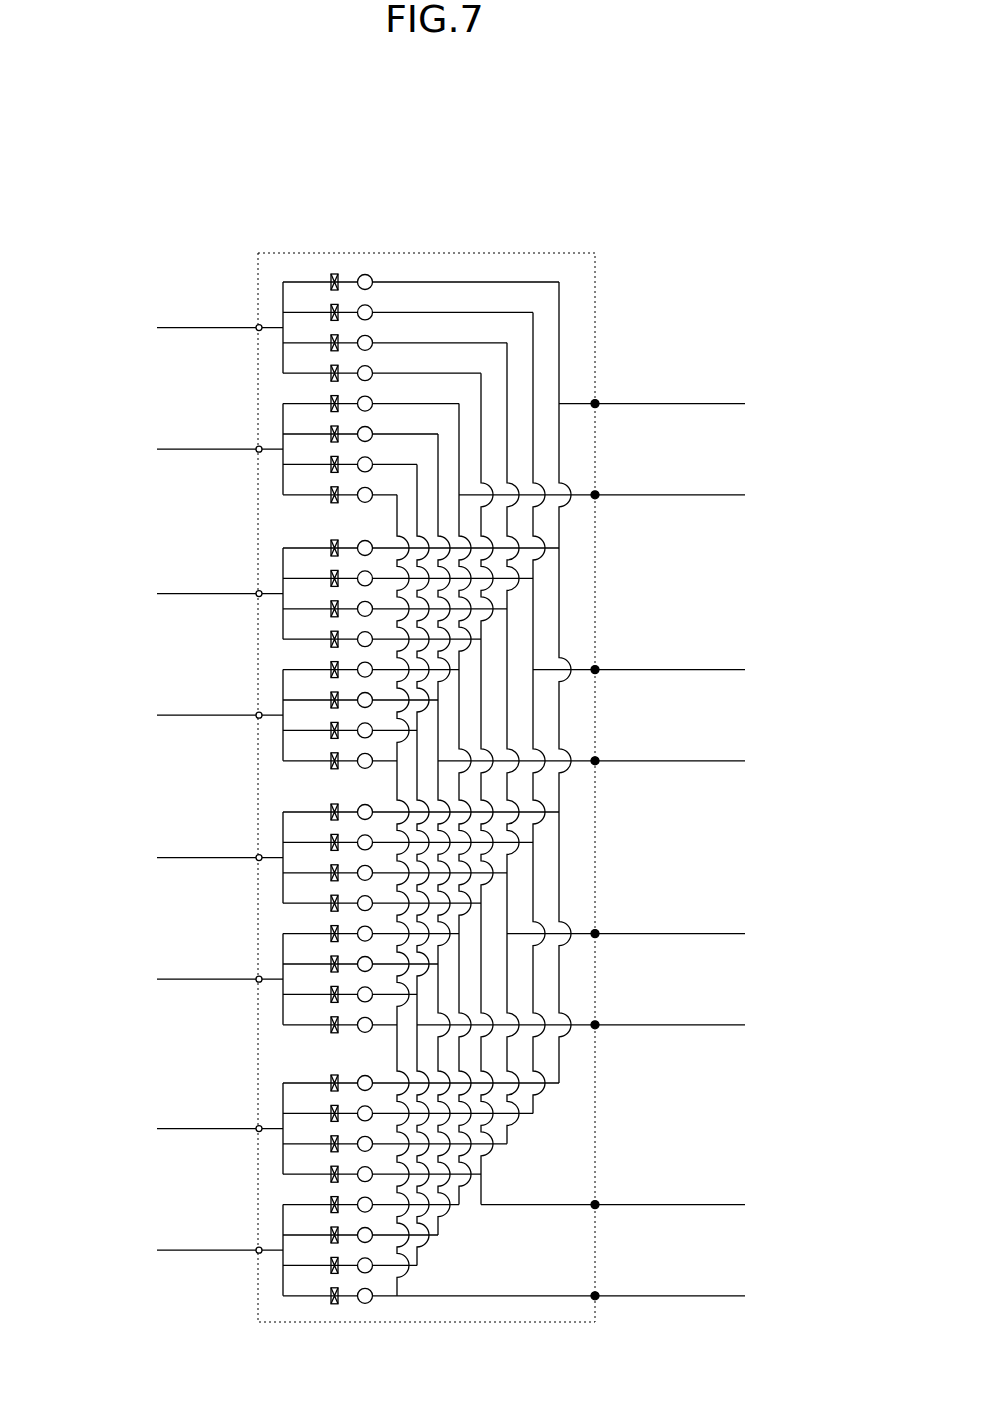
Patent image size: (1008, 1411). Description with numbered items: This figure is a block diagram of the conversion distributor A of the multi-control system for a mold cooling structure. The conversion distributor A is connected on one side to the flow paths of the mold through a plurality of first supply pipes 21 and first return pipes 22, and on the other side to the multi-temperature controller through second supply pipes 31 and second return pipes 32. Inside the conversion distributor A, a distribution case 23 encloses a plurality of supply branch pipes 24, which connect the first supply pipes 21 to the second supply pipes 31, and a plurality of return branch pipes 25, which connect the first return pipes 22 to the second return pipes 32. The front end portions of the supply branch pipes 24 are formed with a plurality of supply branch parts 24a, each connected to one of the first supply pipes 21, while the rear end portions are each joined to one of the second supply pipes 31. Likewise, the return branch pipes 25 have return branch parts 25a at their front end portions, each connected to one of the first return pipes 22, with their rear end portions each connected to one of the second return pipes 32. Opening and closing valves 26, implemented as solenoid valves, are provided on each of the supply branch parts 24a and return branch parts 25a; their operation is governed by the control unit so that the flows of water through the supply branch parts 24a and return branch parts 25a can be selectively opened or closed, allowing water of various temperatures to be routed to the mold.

The first supply pipe 21 is at (198, 450).
The first return pipe 22 is at (198, 327).
The distribution case 23 is at (274, 252).
The supply branch pipe 24 is at (546, 870).
The supply branch part 24a is at (299, 404).
The return branch pipe 25 is at (583, 776).
The return branch part 25a is at (408, 372).
The opening and closing valve 26 is at (335, 274).
The second supply pipe 31 is at (724, 881).
The second return pipe 32 is at (713, 783).
The conversion distributor A is at (483, 725).